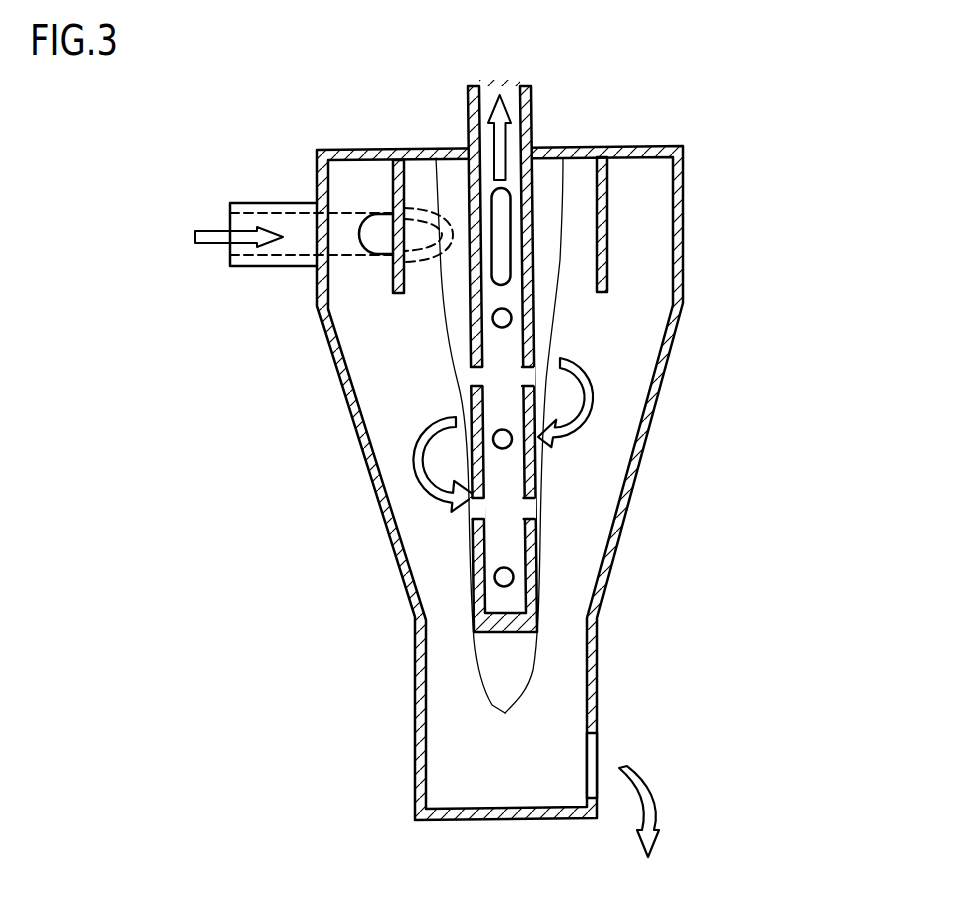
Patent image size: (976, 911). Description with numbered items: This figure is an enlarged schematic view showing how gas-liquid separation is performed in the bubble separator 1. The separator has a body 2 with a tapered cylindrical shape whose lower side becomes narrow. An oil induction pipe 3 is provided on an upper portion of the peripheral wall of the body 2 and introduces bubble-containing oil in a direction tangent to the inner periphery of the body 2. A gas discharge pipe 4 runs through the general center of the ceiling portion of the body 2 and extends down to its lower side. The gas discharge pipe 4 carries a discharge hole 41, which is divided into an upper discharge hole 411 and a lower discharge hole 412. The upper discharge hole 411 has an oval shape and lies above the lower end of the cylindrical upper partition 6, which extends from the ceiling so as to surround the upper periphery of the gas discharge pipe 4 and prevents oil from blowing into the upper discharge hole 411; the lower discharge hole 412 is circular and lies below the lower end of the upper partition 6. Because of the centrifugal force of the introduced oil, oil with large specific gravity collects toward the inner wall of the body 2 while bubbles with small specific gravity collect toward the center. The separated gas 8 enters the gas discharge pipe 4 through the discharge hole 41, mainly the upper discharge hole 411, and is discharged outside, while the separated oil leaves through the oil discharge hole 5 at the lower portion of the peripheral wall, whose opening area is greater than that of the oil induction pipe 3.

The bubble separator 1 is at (537, 463).
The body 2 is at (686, 287).
The oil induction pipe 3 is at (253, 203).
The gas discharge pipe 4 is at (531, 91).
The oil discharge hole 5 is at (603, 740).
The upper partition 6 is at (607, 223).
The gas 8 is at (467, 347).
The discharge hole 41 is at (674, 387).
The upper discharge hole 411 is at (512, 322).
The lower discharge hole 412 is at (508, 280).